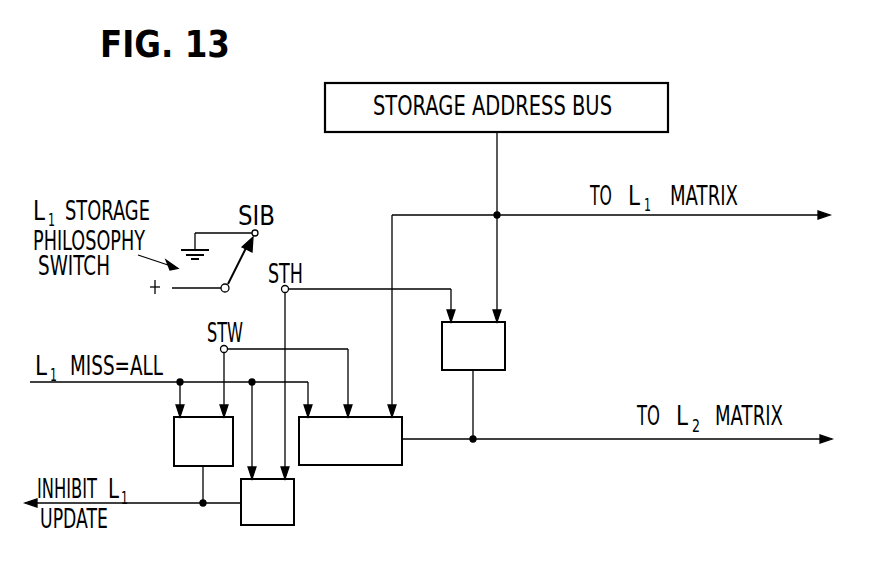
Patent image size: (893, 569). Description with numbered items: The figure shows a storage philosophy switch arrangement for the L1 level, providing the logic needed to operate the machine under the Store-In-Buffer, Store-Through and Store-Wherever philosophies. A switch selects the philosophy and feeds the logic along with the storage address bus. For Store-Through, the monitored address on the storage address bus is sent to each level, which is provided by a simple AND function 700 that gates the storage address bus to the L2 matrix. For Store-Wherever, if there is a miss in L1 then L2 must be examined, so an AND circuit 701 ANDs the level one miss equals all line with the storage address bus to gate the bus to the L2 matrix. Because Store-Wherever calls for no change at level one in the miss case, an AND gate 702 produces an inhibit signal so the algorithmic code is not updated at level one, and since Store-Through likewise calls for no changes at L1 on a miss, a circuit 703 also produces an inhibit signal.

The AND function 700 is at (505, 352).
The AND circuit 701 is at (387, 465).
The AND gate 702 is at (174, 429).
The circuit 703 is at (294, 510).